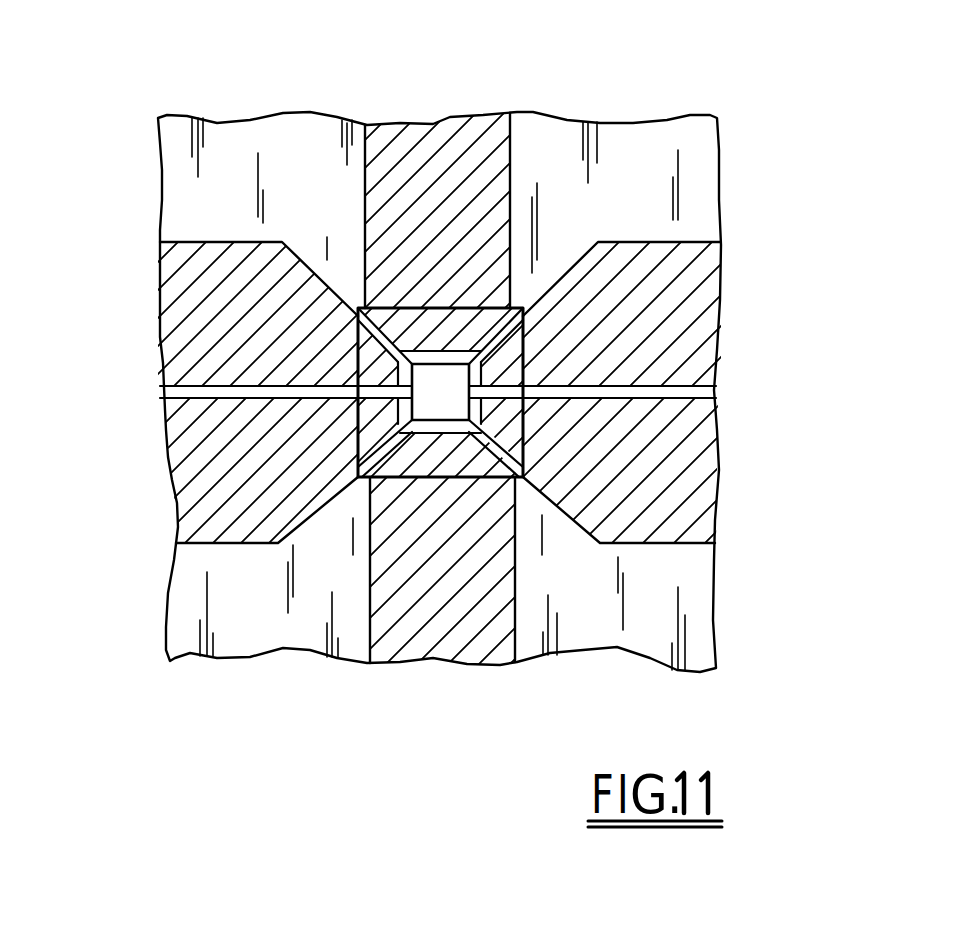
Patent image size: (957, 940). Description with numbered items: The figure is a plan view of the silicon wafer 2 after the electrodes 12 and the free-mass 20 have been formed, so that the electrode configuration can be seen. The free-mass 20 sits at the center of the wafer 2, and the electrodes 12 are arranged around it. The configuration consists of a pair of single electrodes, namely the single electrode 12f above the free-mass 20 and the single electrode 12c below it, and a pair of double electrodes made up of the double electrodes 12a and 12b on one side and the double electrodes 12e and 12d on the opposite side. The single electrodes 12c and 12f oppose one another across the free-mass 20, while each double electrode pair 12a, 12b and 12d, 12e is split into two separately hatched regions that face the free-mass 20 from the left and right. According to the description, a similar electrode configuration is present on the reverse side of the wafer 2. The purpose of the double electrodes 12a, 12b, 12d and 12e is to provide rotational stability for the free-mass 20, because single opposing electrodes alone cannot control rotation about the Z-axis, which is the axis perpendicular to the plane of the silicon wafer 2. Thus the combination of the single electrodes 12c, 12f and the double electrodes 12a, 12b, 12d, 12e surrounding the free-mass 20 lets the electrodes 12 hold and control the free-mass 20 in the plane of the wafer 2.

The wafer 2 is at (705, 173).
The electrodes 12 is at (427, 54).
The double electrode 12a is at (707, 313).
The double electrode 12b is at (700, 467).
The single electrode 12c is at (463, 667).
The double electrode 12d is at (178, 477).
The double electrode 12e is at (168, 325).
The single electrode 12f is at (443, 118).
The free-mass 20 is at (428, 382).